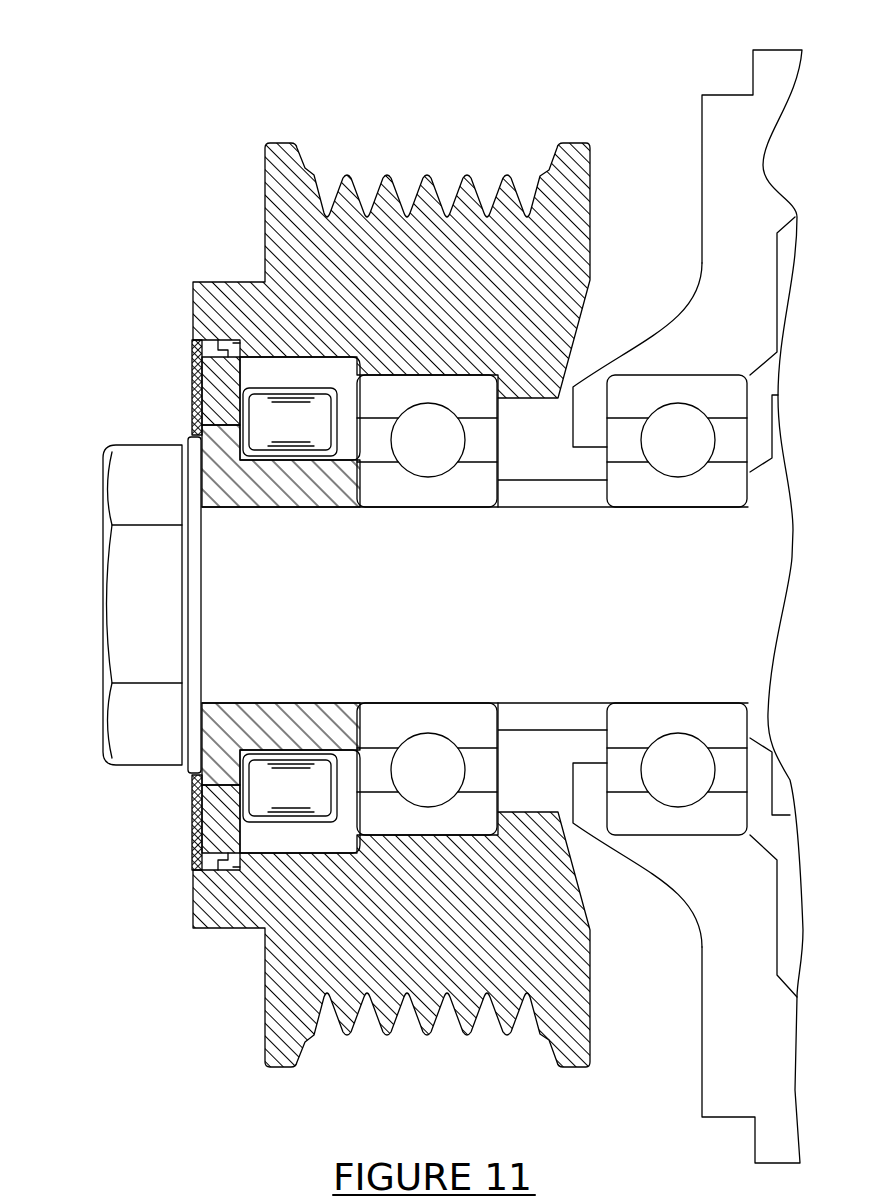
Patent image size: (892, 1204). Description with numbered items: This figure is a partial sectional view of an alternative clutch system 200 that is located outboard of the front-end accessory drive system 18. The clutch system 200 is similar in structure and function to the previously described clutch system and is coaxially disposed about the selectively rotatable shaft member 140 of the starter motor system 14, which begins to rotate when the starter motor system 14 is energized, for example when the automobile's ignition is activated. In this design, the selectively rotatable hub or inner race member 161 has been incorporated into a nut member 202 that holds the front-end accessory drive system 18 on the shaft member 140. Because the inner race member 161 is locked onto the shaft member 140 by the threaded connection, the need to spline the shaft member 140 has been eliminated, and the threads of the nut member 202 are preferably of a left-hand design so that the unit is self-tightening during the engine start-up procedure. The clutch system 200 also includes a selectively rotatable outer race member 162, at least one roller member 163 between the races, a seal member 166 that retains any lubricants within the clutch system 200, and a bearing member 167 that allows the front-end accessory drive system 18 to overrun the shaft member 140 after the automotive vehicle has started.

The clutch system 200 is at (240, 45).
The starter motor system 14 is at (688, 179).
The front-end accessory drive system 18 is at (266, 199).
The shaft member 140 is at (645, 598).
The inner race member 161 is at (243, 490).
The outer race member 162 is at (222, 372).
The roller member 163 is at (267, 797).
The seal member 166 is at (190, 817).
The bearing member 167 is at (457, 438).
The nut member 202 is at (143, 473).